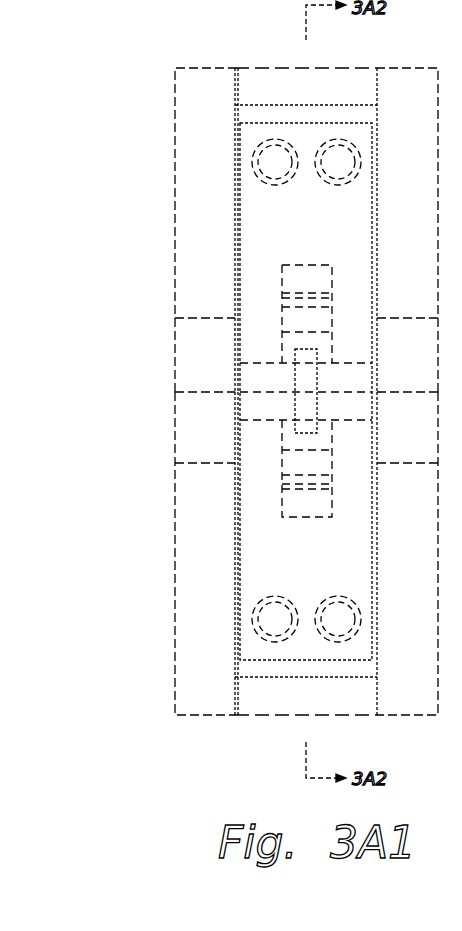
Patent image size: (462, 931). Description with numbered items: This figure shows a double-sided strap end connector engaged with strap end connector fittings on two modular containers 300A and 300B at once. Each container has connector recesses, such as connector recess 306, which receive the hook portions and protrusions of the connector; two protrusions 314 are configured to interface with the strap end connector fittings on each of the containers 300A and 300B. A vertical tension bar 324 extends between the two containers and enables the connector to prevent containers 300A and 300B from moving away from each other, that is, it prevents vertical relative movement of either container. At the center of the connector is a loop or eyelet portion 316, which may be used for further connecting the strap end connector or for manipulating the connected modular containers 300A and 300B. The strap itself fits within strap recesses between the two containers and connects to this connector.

The modular container 300A is at (187, 88).
The modular container 300B is at (187, 693).
The connector recess 306 is at (265, 155).
The protrusion 314 is at (265, 170).
The vertical tension bar 324 is at (265, 240).
The loop or eyelet portion 316 is at (307, 383).